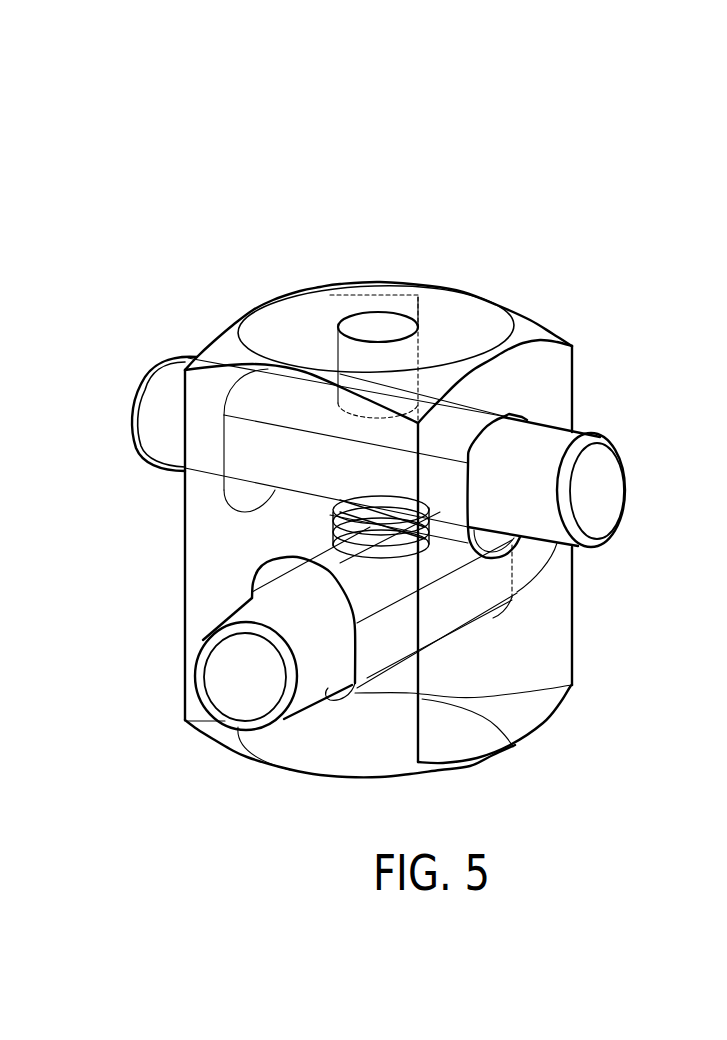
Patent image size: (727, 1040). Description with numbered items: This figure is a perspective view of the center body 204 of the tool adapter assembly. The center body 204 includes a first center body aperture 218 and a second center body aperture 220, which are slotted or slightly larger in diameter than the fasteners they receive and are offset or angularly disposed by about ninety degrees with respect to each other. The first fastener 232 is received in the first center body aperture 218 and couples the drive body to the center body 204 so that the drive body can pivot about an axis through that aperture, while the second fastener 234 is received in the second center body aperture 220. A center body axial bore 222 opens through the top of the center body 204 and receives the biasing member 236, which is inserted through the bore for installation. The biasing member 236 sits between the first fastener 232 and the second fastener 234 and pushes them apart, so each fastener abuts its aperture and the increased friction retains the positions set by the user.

The center body 204 is at (191, 95).
The first center body aperture 218 is at (520, 546).
The second center body aperture 220 is at (253, 597).
The center body axial bore 222 is at (378, 318).
The first fastener 232 is at (155, 428).
The second fastener 234 is at (213, 673).
The biasing member 236 is at (335, 520).